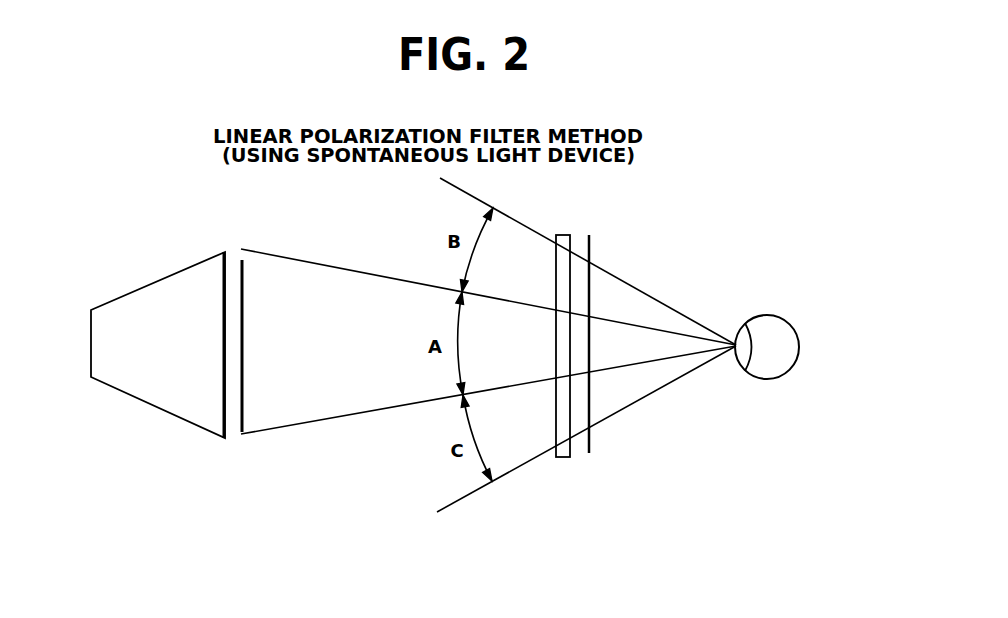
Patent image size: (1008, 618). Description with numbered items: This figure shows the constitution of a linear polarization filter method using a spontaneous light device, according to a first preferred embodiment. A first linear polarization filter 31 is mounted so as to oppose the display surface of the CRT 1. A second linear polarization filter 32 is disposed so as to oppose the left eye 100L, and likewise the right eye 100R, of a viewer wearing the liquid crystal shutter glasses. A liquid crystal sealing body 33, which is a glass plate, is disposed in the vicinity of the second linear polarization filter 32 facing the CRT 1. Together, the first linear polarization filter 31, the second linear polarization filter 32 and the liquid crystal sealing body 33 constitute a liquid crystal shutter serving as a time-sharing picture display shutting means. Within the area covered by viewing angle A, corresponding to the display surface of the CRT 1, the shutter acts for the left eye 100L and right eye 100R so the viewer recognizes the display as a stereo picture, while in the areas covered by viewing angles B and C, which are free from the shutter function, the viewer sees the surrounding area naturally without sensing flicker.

The CRT 1 is at (92, 310).
The first linear polarization filter 31 is at (238, 436).
The second linear polarization filter 32 is at (590, 447).
The liquid crystal sealing body 33 is at (558, 465).
The left eye 100L is at (752, 327).
The right eye 100R is at (764, 330).